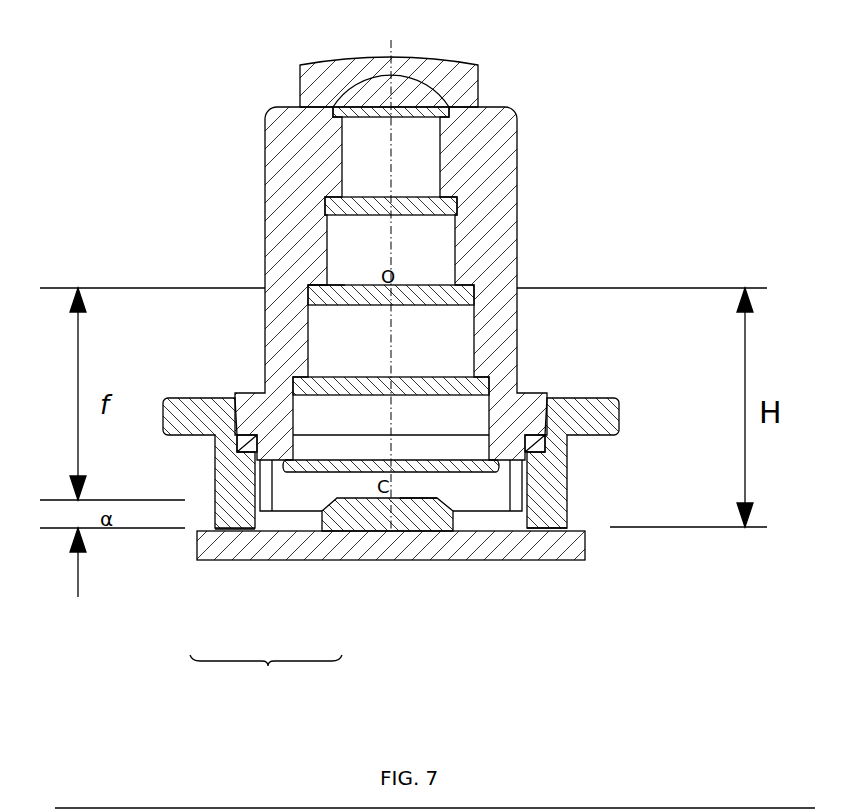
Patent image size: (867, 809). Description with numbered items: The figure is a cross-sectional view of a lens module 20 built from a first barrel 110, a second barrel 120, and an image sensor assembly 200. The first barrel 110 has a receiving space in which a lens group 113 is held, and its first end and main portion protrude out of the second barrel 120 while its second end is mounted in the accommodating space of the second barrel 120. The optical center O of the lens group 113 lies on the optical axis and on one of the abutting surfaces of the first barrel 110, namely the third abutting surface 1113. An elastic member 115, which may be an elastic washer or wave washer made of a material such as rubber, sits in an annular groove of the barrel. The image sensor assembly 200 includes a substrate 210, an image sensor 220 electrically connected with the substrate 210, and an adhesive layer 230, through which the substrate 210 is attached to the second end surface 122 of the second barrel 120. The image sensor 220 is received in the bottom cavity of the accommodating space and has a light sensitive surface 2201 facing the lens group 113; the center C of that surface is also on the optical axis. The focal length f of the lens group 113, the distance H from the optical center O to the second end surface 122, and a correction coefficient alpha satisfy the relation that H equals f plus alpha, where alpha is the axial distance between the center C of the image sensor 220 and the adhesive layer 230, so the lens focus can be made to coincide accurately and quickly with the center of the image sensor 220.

The lens module 20 is at (195, 50).
The first barrel 110 is at (505, 194).
The lens group 113 is at (452, 298).
The third abutting surface 1113 is at (318, 283).
The elastic member 115 is at (540, 438).
The second barrel 120 is at (546, 492).
The second end surface 122 is at (548, 528).
The adhesive layer 230 is at (230, 537).
The substrate 210 is at (292, 540).
The image sensor 220 is at (395, 530).
The light sensitive surface 2201 is at (436, 502).
The image sensor assembly 200 is at (266, 686).